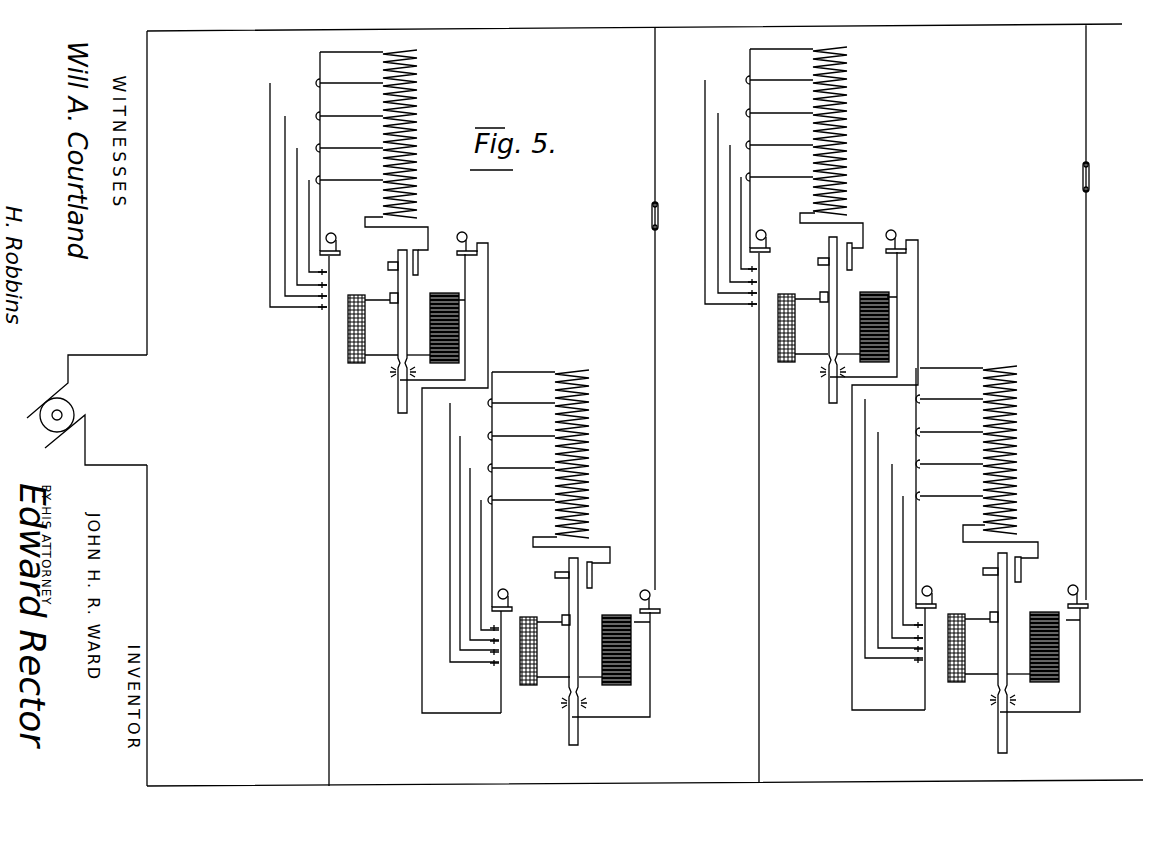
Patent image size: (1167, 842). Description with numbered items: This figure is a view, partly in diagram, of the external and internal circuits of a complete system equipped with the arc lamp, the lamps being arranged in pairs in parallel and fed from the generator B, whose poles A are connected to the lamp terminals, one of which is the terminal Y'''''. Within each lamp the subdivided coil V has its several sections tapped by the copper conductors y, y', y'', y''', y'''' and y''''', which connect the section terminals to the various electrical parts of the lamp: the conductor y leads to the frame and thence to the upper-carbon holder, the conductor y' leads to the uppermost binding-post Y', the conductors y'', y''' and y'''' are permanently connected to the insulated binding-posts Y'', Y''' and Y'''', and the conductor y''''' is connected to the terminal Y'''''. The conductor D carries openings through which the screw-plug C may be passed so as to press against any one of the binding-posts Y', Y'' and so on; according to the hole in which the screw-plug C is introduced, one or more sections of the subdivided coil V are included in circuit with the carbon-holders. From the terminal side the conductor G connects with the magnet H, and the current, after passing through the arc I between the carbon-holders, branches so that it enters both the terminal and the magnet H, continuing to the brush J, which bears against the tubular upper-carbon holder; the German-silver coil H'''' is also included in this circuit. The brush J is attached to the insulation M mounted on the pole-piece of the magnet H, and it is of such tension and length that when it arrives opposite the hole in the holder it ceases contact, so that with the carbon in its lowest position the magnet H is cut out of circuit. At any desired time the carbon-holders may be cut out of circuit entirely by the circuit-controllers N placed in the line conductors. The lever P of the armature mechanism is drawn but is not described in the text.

The subdivided coil V is at (709, 292).
The conductor y is at (686, 385).
The conductor y' is at (651, 328).
The conductor y'' is at (651, 296).
The conductor y''' is at (651, 264).
The conductor y'''' is at (651, 232).
The conductor y''''' is at (651, 200).
The binding-post Y' is at (635, 446).
The binding-post Y'' is at (642, 464).
The binding-post Y''' is at (605, 491).
The binding-post Y'''' is at (612, 508).
The terminal Y''''' is at (722, 411).
The screw-plug C is at (636, 483).
The brush J is at (681, 451).
The insulation M is at (420, 277).
The magnet H is at (733, 488).
The German-silver coil H'''' is at (673, 489).
The conductor G is at (749, 484).
The arc I is at (390, 374).
The lever P is at (398, 410).
The conductor D is at (322, 478).
The circuit-controller N is at (1081, 184).
The pole A is at (76, 389).
The generator B is at (61, 412).